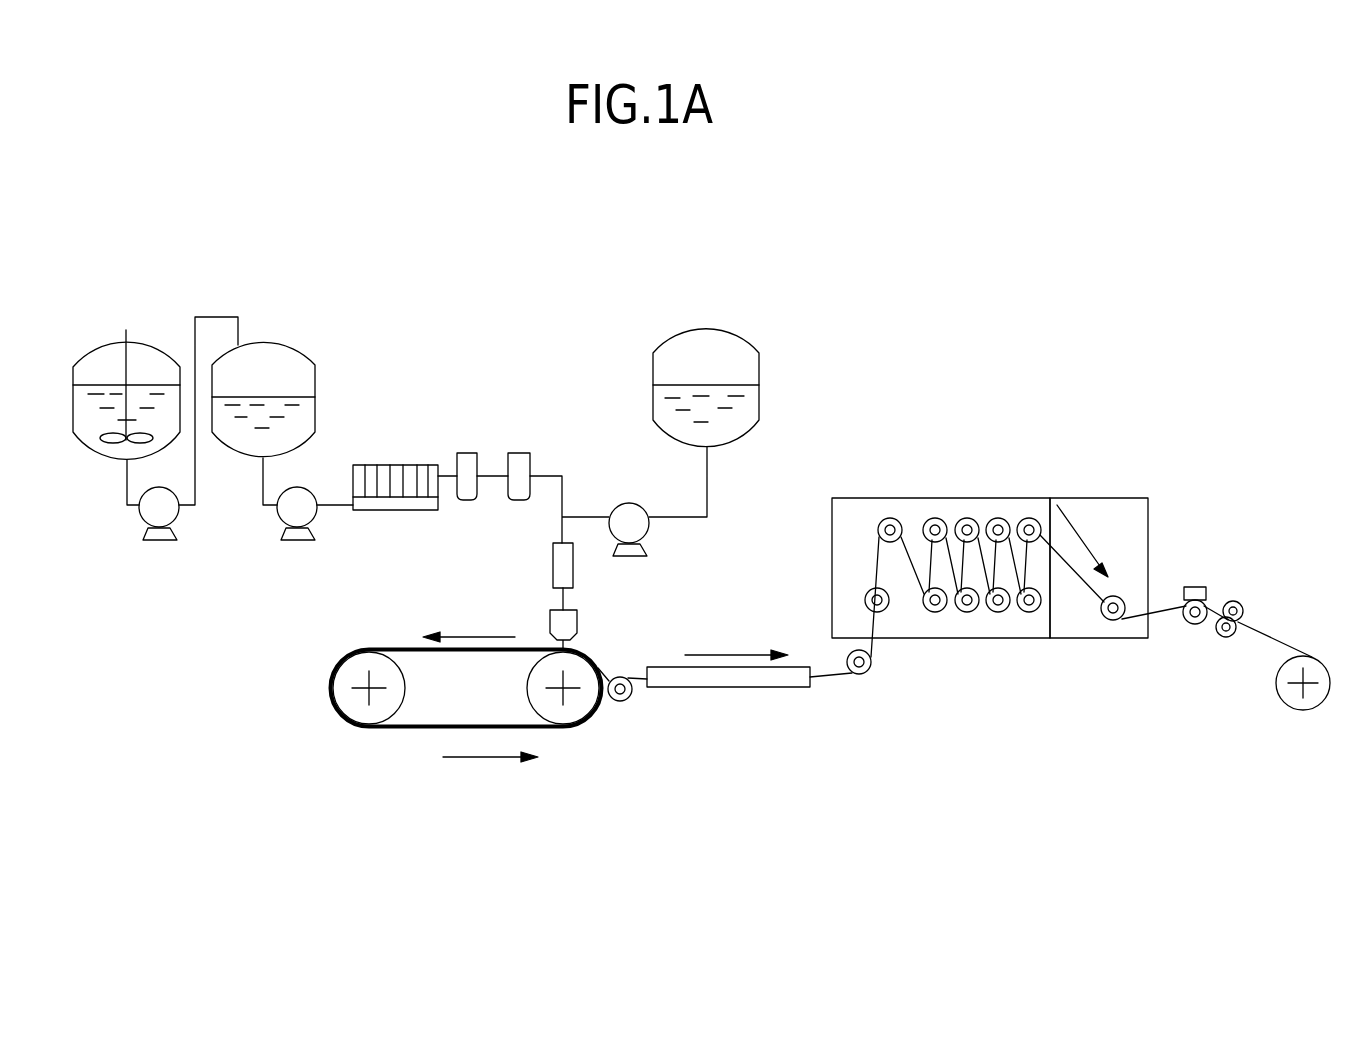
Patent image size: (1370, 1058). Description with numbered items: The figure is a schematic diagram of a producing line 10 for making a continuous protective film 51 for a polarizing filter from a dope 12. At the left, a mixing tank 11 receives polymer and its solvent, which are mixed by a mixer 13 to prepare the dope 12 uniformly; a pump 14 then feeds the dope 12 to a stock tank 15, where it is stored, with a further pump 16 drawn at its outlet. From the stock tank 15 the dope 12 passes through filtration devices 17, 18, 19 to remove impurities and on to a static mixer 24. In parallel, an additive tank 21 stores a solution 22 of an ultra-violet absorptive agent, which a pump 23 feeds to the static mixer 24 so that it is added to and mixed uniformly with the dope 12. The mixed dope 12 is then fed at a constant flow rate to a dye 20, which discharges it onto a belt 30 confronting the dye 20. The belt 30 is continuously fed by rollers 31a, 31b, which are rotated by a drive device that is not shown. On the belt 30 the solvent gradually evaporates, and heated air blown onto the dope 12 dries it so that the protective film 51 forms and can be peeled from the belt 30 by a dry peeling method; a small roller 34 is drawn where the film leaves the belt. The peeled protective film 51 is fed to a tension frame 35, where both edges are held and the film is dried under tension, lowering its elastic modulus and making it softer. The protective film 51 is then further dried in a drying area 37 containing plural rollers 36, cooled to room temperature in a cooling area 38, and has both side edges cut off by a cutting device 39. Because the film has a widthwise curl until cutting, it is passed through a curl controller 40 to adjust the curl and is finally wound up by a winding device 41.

The producing line 10 is at (552, 304).
The mixing tank 11 is at (92, 353).
The dope solution 12 is at (148, 402).
The mixer 13 is at (107, 447).
The pump 14 is at (163, 541).
The stock tank 15 is at (317, 383).
The pump 16 is at (297, 541).
The filtration device 17 is at (397, 465).
The filtration device 18 is at (465, 453).
The filtration device 19 is at (523, 453).
The dye 20 is at (550, 622).
The additive tank 21 is at (759, 386).
The solution of ultra-violet absorptive agent 22 is at (675, 427).
The pump 23 is at (640, 503).
The static mixer 24 is at (553, 572).
The belt 30 is at (597, 653).
The roller 31a is at (369, 715).
The roller 31b is at (563, 715).
The film web 34 is at (628, 697).
The tension frame 35 is at (738, 690).
The rollers 36 is at (962, 520).
The drying area 37 is at (962, 638).
The cooling area 38 is at (1103, 638).
The cutting device 39 is at (1198, 587).
The curl controller 40 is at (1218, 634).
The winding device 41 is at (1318, 697).
The protective film 51 is at (620, 701).